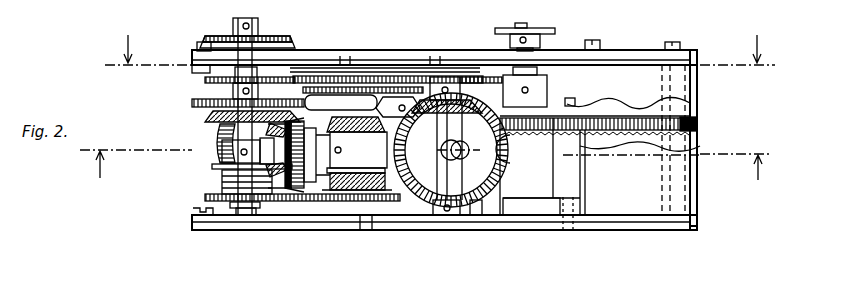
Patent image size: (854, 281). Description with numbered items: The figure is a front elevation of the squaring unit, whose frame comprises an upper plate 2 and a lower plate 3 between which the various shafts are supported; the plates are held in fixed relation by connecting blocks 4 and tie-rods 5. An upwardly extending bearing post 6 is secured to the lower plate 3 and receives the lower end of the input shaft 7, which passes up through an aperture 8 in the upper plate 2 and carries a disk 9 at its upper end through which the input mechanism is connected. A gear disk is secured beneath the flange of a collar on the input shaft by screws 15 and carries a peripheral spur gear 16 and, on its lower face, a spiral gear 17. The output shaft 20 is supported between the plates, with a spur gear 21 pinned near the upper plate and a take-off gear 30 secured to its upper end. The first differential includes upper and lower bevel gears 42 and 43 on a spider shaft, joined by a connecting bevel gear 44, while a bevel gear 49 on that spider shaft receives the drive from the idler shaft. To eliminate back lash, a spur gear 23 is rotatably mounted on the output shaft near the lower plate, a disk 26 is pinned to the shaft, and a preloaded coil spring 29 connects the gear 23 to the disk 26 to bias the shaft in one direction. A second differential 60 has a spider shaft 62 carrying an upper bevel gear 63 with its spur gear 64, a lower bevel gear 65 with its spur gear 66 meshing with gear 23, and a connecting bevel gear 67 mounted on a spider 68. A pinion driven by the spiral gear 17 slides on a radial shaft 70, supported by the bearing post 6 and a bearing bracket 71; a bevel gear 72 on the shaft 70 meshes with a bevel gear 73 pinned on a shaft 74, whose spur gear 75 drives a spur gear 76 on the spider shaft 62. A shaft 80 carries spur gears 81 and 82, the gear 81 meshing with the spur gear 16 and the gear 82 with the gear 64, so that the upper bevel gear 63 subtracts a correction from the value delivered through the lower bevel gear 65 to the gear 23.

The upper plate 2 is at (693, 55).
The lower plate 3 is at (698, 230).
The connecting blocks 4 is at (440, 39).
The tie-rods 5 is at (695, 112).
The bearing post 6 is at (555, 182).
The input shaft 7 is at (537, 47).
The aperture 8 is at (425, 176).
The disk 9 is at (553, 32).
The screws 15 is at (577, 100).
The spur gear 16 is at (700, 126).
The spiral gear 17 is at (629, 137).
The output shaft 20 is at (258, 27).
The spur gear 21 is at (212, 100).
The spur gear 23 is at (210, 207).
The disk 26 is at (225, 168).
The coil spring 29 is at (225, 180).
The take-off gear 30 is at (222, 36).
The upper bevel gear 42 is at (222, 116).
The lower bevel gear 43 is at (215, 197).
The connecting bevel gear 44 is at (228, 146).
The bevel gear 49 is at (208, 78).
The second differential 60 is at (222, 159).
The spider shaft 62 is at (345, 58).
The upper bevel gear 63 is at (349, 122).
The spur gear 64 is at (375, 95).
The lower bevel gear 65 is at (331, 200).
The spur gear 66 is at (300, 195).
The connecting bevel gear 67 is at (286, 200).
The spider 68 is at (357, 169).
The shaft 70 is at (517, 163).
The bearing bracket 71 is at (500, 214).
The bevel gear 72 is at (478, 215).
The bevel gear 73 is at (456, 118).
The shaft 74 is at (447, 182).
The spur gear 75 is at (448, 100).
The spur gear 76 is at (305, 76).
The shaft 80 is at (402, 62).
The spur gear 81 is at (451, 150).
The spur gear 82 is at (436, 78).